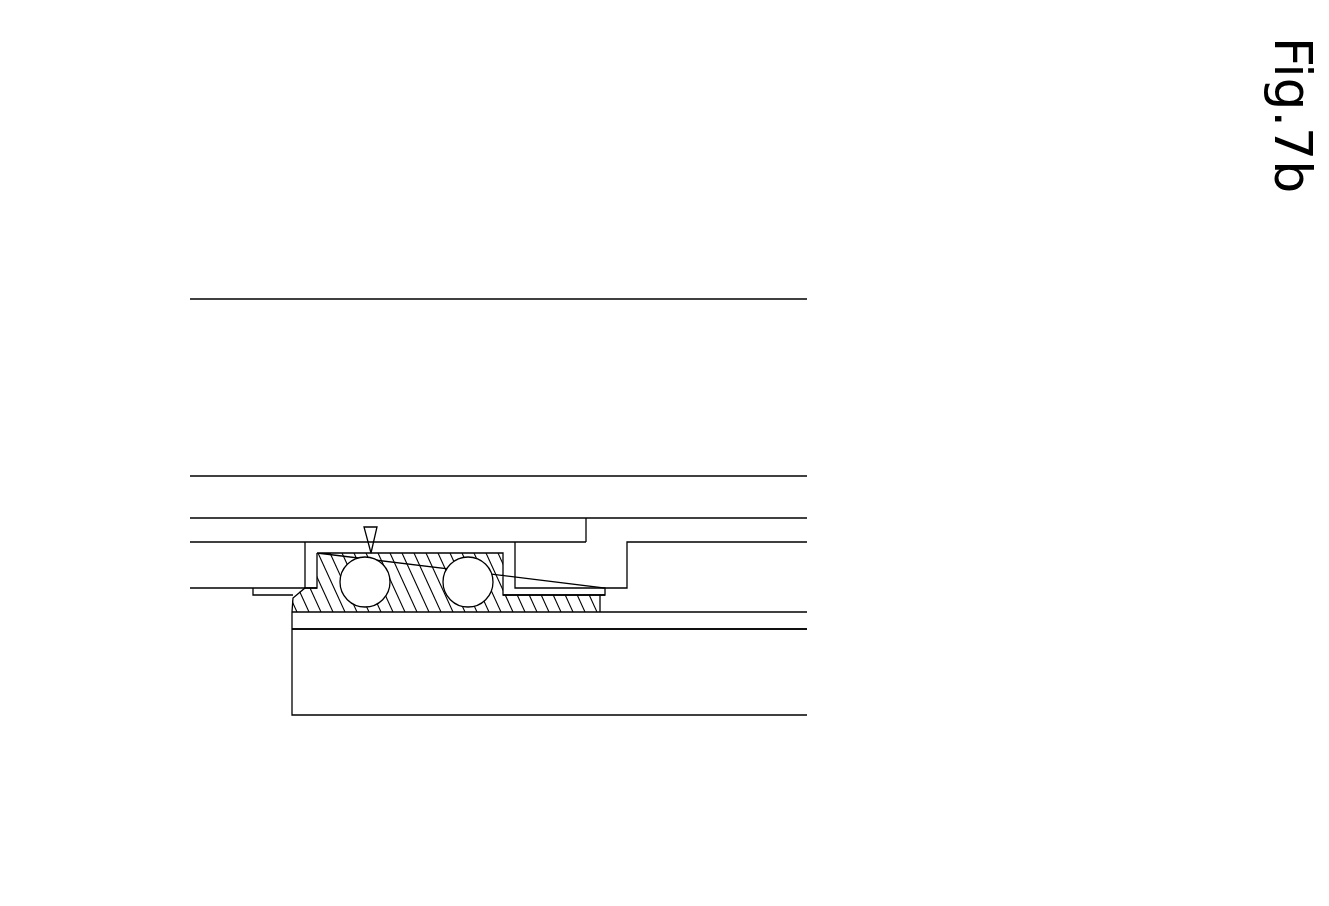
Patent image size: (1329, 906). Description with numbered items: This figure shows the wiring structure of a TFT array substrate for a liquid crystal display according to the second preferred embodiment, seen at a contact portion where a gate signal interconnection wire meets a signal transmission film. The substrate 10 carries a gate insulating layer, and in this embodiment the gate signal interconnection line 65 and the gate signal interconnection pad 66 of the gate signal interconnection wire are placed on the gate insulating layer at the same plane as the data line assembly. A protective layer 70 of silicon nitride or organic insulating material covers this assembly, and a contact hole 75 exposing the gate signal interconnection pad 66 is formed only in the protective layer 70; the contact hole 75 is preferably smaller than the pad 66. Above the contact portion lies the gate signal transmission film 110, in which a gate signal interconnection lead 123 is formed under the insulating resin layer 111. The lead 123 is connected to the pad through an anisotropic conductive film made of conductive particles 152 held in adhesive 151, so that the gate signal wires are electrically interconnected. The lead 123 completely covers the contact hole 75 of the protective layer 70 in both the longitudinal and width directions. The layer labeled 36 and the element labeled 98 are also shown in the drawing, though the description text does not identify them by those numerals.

The substrate 10 is at (457, 310).
The layer 36 is at (203, 490).
The gate signal interconnection line 65 is at (203, 528).
The gate signal interconnection pad 66 is at (556, 530).
The protective layer 70 is at (792, 532).
The contact hole 75 is at (370, 527).
The thin layer 98 is at (538, 597).
The gate signal interconnection lead 123 is at (403, 623).
The adhesive 151 is at (285, 612).
The conductive particle 152 is at (458, 603).
The gate signal transmission film 110 is at (549, 712).
The insulating resin layer 111 is at (549, 740).